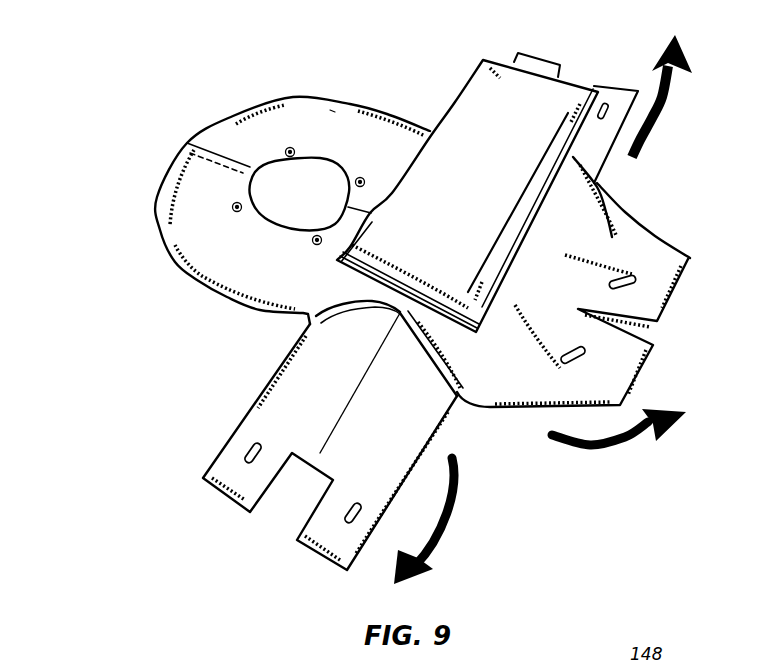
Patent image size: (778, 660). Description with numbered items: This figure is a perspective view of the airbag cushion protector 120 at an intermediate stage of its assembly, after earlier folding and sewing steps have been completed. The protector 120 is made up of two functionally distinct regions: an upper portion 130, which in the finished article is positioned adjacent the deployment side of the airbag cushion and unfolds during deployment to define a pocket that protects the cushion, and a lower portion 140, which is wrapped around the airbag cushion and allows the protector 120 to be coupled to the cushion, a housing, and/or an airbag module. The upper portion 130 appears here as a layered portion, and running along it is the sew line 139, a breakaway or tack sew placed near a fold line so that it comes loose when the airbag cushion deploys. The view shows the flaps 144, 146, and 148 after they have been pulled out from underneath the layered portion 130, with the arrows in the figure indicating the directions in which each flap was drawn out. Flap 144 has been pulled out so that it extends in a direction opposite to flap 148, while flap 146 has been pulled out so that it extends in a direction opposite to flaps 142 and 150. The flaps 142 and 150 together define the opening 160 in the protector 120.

The airbag cushion protector 120 is at (158, 121).
The upper portion 130 is at (562, 97).
The sew line 139 is at (552, 140).
The lower portion 140 is at (497, 448).
The flap 142 is at (213, 238).
The flap 144 is at (335, 458).
The flap 146 is at (620, 247).
The flap 148 is at (620, 97).
The flap 150 is at (344, 128).
The opening 160 is at (281, 176).